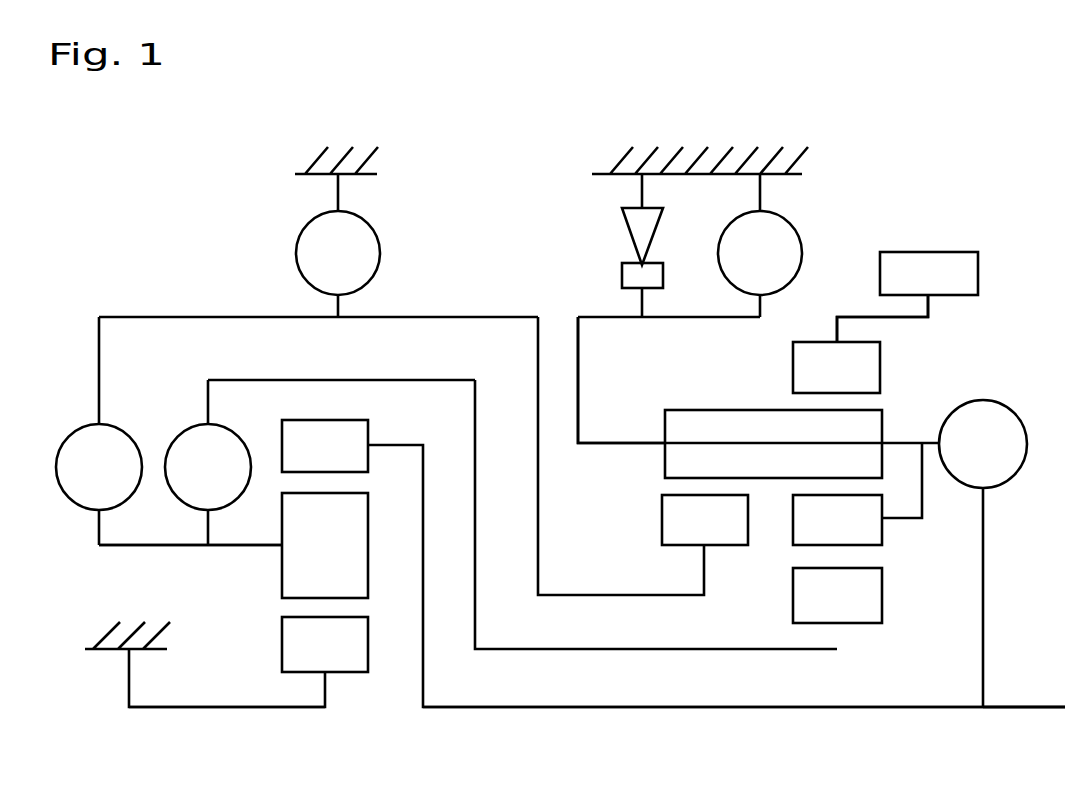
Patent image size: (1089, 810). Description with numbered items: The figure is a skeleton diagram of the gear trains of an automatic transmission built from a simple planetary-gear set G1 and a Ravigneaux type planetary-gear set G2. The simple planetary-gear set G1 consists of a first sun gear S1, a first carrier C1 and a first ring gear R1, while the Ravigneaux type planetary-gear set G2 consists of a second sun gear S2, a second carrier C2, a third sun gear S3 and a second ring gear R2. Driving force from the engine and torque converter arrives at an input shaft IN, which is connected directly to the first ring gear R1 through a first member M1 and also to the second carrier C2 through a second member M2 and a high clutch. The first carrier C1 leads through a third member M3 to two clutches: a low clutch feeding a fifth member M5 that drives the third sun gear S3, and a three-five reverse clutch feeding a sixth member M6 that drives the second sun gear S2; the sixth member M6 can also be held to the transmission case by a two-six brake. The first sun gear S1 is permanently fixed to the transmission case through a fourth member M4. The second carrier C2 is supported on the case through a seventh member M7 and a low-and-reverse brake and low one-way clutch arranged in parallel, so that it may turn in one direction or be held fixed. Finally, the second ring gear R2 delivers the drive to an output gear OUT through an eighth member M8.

The first member M1 is at (563, 708).
The second member M2 is at (984, 553).
The third member M3 is at (237, 550).
The fourth member M4 is at (241, 710).
The fifth member M5 is at (563, 650).
The sixth member M6 is at (563, 596).
The seventh member M7 is at (581, 347).
The eighth member M8 is at (857, 315).
The simple planetary-gear set G1 is at (357, 676).
The Ravigneaux type planetary-gear set G2 is at (884, 612).
The second carrier C2 is at (665, 425).
The first ring gear R1 is at (325, 446).
The first carrier C1 is at (325, 545).
The first sun gear S1 is at (325, 644).
The second sun gear S2 is at (705, 520).
The third sun gear S3 is at (837, 595).
The second ring gear R2 is at (836, 367).
The output gear OUT is at (929, 273).
The input shaft IN is at (1024, 685).